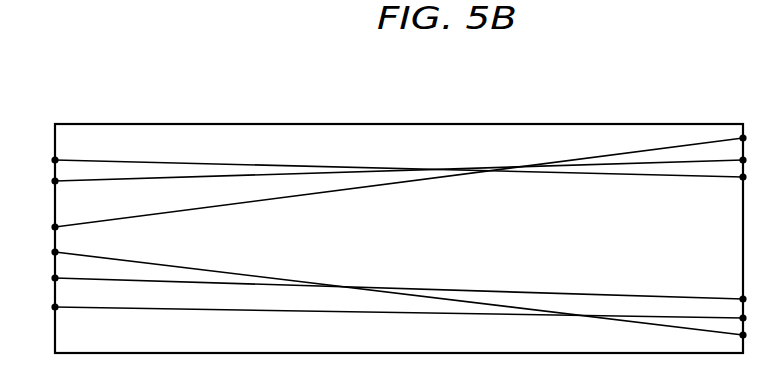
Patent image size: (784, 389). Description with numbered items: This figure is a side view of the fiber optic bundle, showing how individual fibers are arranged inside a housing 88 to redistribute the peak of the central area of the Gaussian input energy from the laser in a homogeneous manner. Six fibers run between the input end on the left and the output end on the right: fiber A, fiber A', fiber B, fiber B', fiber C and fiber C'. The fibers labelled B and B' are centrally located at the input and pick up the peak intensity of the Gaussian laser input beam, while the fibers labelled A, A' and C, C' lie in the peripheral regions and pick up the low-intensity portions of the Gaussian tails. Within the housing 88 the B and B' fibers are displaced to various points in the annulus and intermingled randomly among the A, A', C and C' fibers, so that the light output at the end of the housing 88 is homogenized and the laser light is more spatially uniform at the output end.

The housing 88 is at (397, 124).
The fiber A— A is at (395, 169).
The fiber A'— A' is at (398, 171).
The fiber B— B is at (398, 183).
The fiber B'— B' is at (398, 294).
The fiber C— C is at (395, 289).
The fiber C'— C' is at (398, 313).